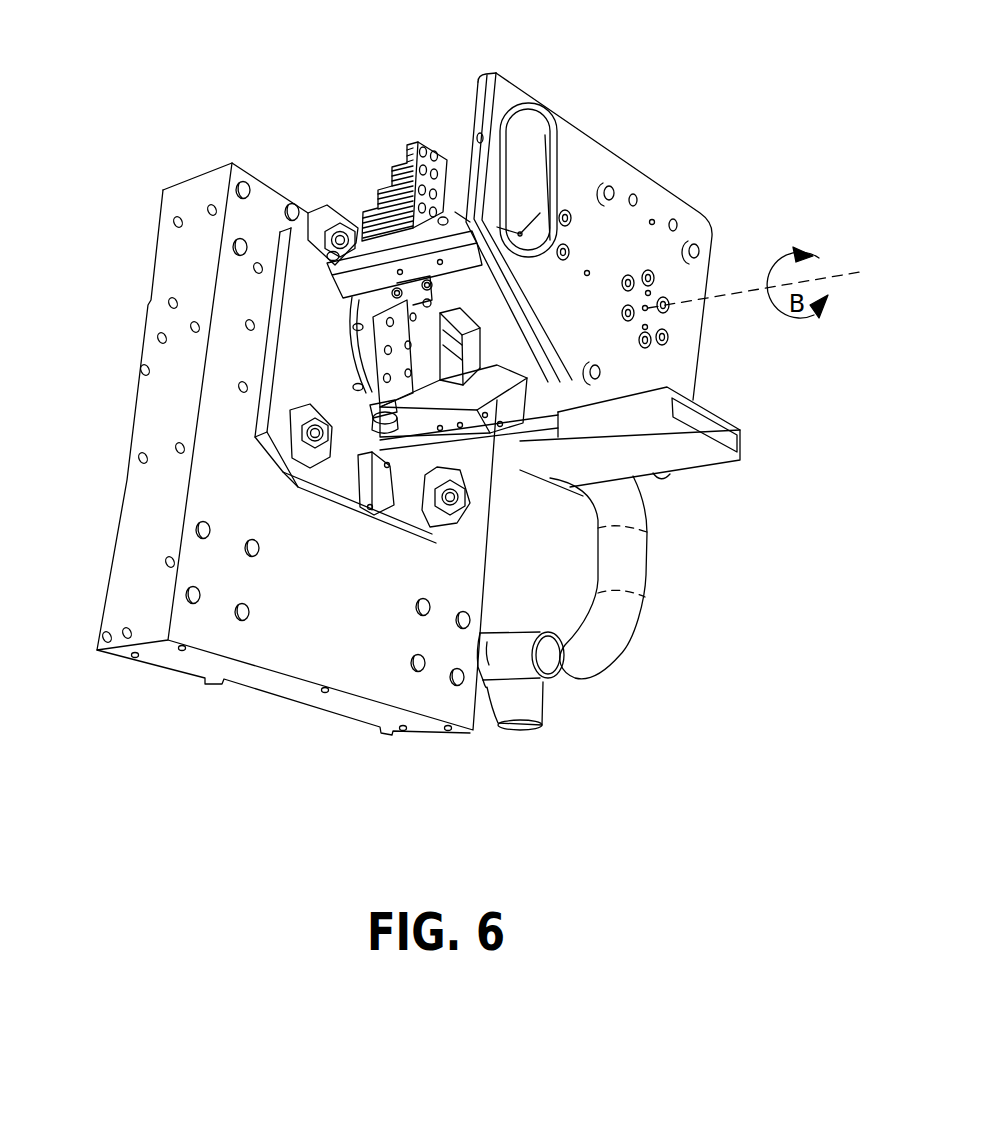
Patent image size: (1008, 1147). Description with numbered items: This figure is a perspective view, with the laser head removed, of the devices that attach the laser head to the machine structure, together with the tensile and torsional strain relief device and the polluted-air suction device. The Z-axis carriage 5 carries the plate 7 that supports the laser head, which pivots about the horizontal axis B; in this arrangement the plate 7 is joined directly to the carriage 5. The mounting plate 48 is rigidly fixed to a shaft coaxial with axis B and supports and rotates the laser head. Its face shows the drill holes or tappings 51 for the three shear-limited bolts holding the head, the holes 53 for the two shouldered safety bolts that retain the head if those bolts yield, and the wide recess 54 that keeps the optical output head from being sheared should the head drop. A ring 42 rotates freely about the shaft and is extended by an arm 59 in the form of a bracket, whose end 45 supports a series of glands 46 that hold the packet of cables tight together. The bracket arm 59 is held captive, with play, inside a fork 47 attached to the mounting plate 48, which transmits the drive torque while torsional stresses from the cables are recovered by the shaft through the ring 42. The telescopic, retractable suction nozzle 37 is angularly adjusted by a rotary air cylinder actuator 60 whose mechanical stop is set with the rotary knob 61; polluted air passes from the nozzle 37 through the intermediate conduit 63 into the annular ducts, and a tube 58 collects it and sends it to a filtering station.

The carriage 5 is at (228, 497).
The plate 7 is at (333, 402).
The suction nozzle 37 is at (710, 427).
The ring 42 is at (527, 353).
The end of the arm 45 is at (362, 255).
The glands 46 is at (407, 145).
The fork 47 is at (530, 227).
The mounting plate 48 is at (486, 74).
The drill holes or tappings 51 is at (612, 193).
The holes 53 is at (634, 200).
The recess 54 is at (518, 143).
The tube 58 is at (627, 568).
The arm 59 is at (441, 219).
The rotary air cylinder actuator 60 is at (380, 371).
The rotary knob 61 is at (380, 418).
The intermediate conduit 63 is at (447, 403).